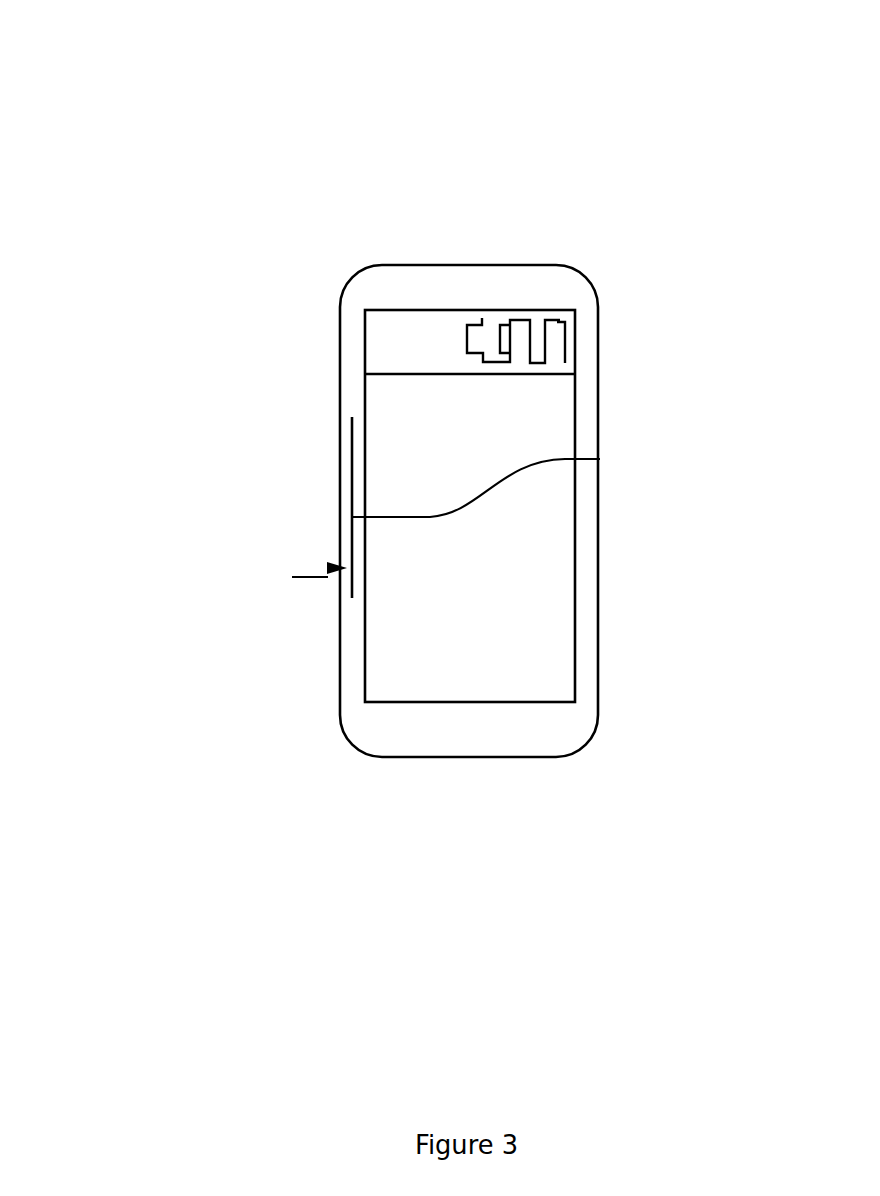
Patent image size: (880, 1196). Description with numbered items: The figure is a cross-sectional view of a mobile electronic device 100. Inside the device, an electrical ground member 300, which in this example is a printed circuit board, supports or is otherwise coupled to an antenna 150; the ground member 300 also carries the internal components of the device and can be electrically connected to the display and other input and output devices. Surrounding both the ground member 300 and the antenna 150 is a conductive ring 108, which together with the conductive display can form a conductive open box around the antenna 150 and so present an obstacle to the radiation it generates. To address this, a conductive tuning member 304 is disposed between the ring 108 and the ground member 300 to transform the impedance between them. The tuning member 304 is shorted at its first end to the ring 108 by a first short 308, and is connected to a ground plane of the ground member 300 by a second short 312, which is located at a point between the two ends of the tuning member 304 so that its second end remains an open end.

The mobile electronic device 100 is at (383, 385).
The conductive ring 108 is at (341, 324).
The antenna 150 is at (558, 322).
The electrical ground member 300 is at (513, 560).
The conductive tuning member 304 is at (292, 577).
The first short 308 is at (352, 417).
The second short 312 is at (598, 458).